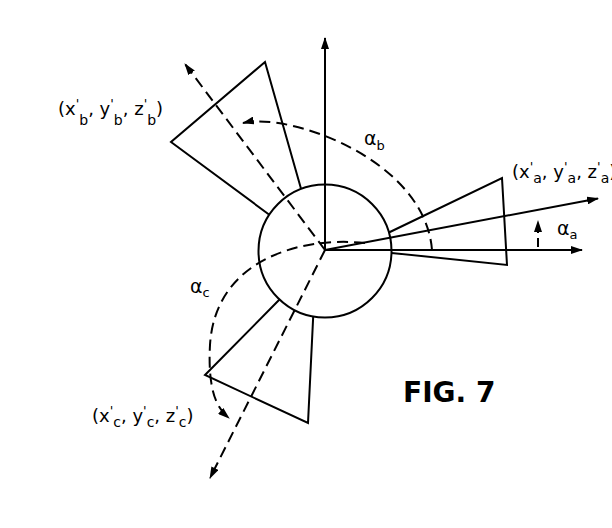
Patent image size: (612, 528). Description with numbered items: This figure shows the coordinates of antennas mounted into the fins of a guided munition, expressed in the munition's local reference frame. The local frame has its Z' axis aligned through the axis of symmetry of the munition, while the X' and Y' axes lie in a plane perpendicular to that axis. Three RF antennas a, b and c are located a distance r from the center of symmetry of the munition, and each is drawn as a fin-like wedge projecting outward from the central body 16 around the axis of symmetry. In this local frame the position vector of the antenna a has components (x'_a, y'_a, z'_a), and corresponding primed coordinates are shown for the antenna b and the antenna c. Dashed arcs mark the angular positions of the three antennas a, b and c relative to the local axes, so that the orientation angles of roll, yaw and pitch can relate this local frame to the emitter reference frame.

The sensor body 16 is at (377, 290).
The RF antenna a is at (478, 267).
The RF antenna b is at (190, 182).
The RF antenna c is at (310, 386).